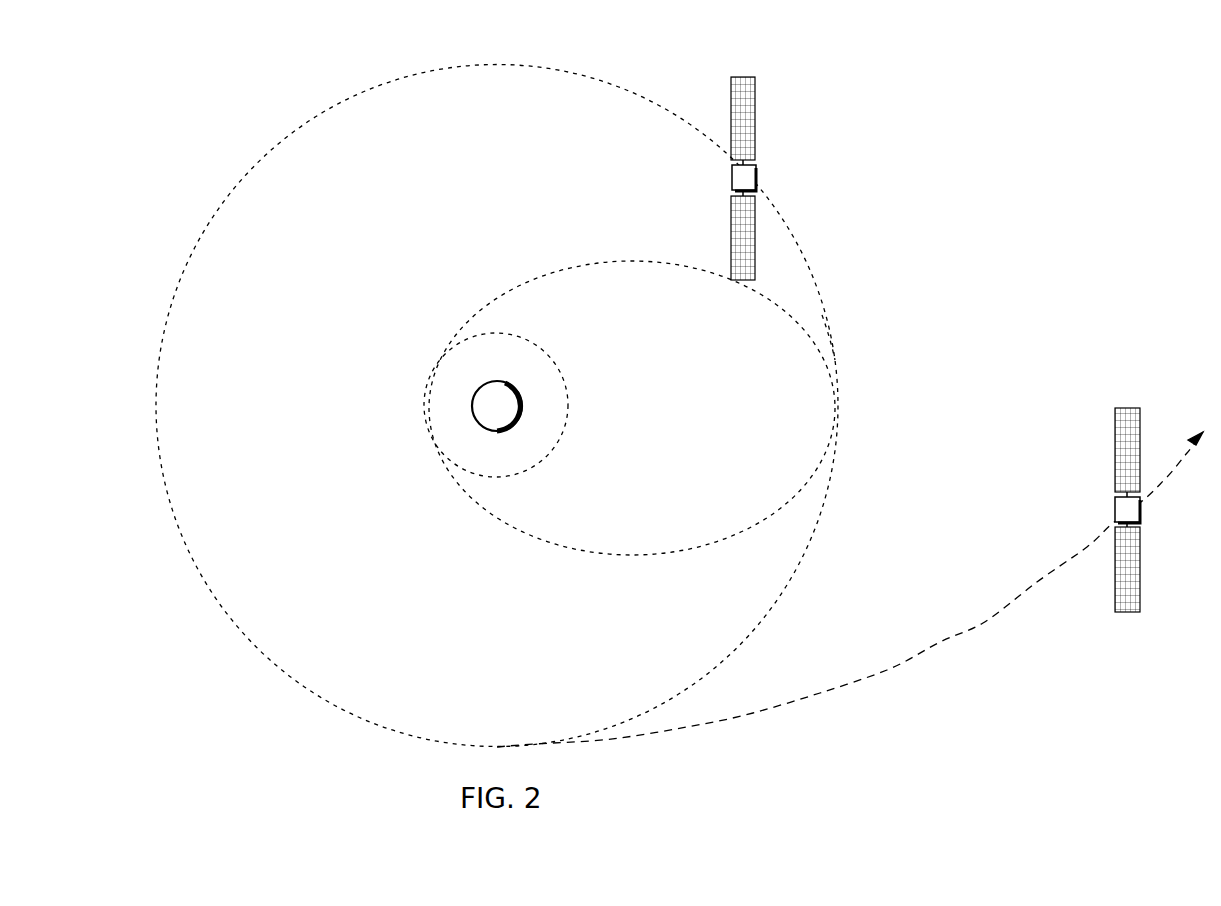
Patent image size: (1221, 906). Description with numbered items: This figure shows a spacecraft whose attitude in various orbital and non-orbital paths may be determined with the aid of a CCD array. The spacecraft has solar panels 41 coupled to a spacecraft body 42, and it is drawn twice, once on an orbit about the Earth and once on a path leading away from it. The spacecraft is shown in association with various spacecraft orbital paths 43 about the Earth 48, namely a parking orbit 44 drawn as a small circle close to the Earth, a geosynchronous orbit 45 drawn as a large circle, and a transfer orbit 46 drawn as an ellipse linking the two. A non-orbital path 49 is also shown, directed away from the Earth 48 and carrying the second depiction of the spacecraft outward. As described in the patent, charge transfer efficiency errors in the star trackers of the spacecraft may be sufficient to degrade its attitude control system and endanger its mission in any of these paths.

The solar panels 41 is at (733, 236).
The spacecraft body 42 is at (730, 178).
The spacecraft orbital paths 43 is at (838, 338).
The parking orbit 44 is at (496, 406).
The geosynchronous orbit 45 is at (497, 406).
The transfer orbit 46 is at (632, 416).
The Earth 48 is at (522, 405).
The non-orbital path 49 is at (850, 589).